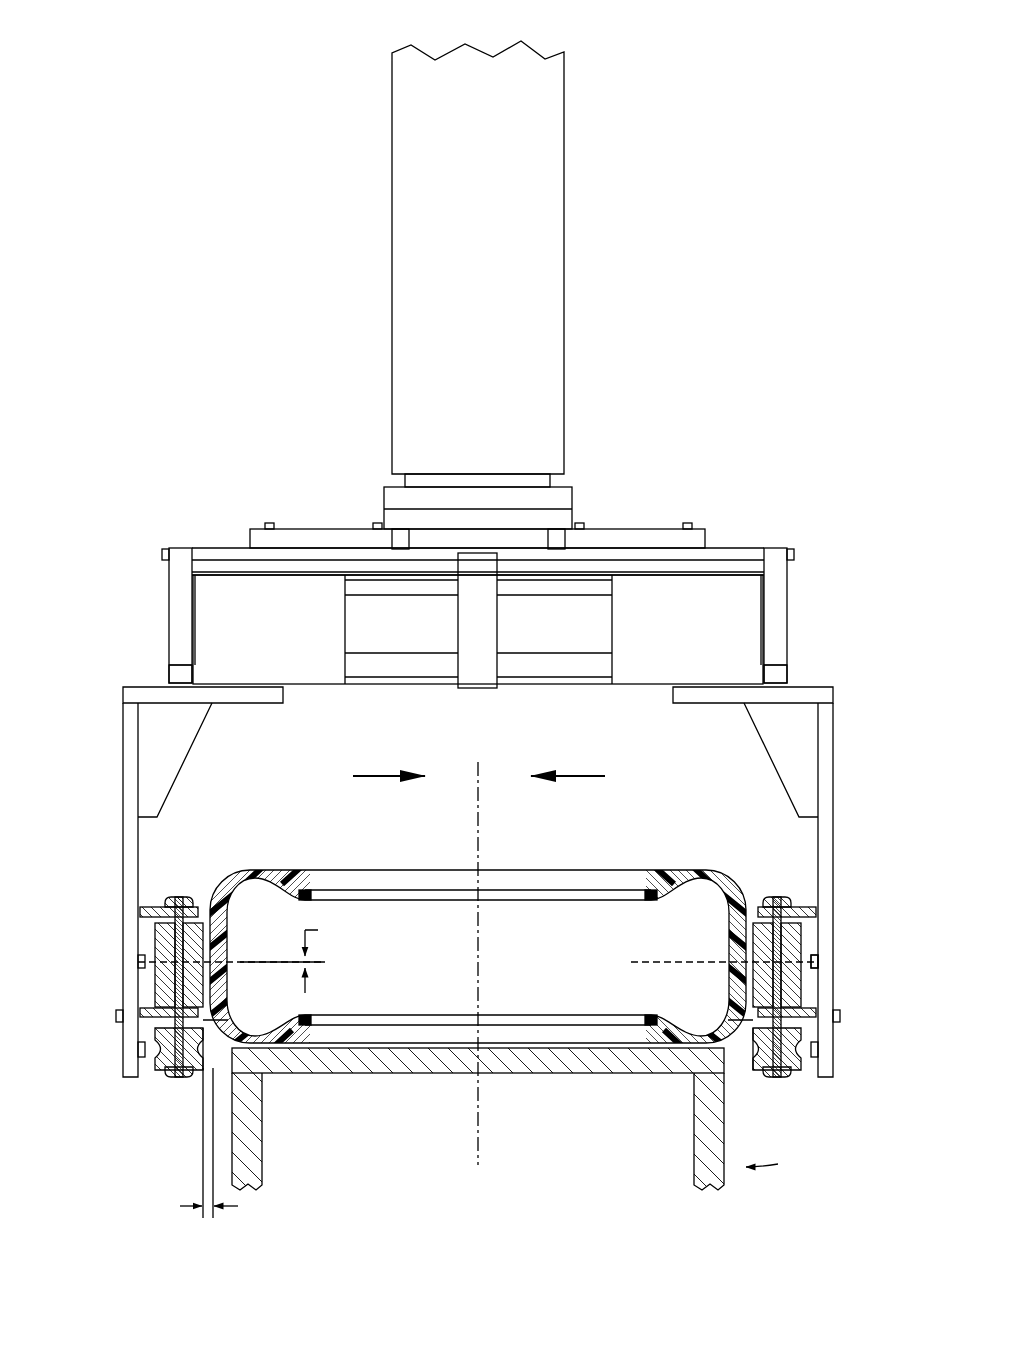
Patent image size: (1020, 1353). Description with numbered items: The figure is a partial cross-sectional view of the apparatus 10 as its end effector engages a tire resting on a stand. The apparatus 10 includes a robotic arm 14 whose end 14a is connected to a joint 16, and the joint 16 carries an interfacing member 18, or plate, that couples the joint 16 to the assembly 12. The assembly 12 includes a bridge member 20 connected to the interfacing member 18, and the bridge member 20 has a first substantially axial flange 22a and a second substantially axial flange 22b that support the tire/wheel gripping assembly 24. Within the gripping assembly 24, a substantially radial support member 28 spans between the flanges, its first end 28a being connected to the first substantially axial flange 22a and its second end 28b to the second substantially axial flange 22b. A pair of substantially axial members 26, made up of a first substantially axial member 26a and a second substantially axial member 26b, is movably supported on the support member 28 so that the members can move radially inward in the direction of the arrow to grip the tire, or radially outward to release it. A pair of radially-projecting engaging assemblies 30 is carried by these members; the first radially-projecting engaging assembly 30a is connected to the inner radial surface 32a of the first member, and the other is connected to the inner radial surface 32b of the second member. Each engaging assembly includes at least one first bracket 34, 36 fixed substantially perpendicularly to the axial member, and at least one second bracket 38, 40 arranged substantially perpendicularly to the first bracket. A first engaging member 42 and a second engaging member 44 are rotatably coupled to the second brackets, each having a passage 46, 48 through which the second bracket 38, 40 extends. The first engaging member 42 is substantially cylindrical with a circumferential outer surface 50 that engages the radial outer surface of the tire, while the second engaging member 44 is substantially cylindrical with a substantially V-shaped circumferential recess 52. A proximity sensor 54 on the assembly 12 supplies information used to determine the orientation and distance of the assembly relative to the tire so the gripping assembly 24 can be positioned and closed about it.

The apparatus 10 is at (158, 79).
The assembly 12 is at (167, 496).
The robotic arm 14 is at (359, 375).
The end 14a is at (569, 466).
The joint 16 is at (366, 513).
The interfacing member 18 is at (583, 511).
The bridge member 20 is at (667, 516).
The first substantially axial flange 22a is at (160, 607).
The second substantially axial flange 22b is at (796, 607).
The tire/wheel gripping assembly 24 is at (96, 810).
The pair of substantially axial members 26 is at (118, 851).
The first substantially axial member 26a is at (121, 890).
The second substantially axial member 26b is at (836, 890).
The substantially radial support member 28 is at (400, 688).
The first end 28a is at (199, 667).
The second end 28b is at (757, 667).
The pair of radially-projecting engaging assemblies 30 is at (194, 886).
The first radially-projecting engaging assembly 30a is at (203, 894).
The inner radial surface 32a is at (139, 845).
The inner radial surface 32b is at (817, 845).
The first bracket 34 is at (135, 907).
The first bracket 36 is at (199, 1016).
The second bracket 38 is at (175, 1079).
The second bracket 40 is at (478, 987).
The first engaging member 42 is at (228, 927).
The second engaging member 44 is at (195, 1083).
The passage 46 is at (195, 957).
The passage 48 is at (199, 1032).
The circumferential outer surface 50 is at (209, 982).
The substantially V-shaped circumferential recess 52 is at (204, 1048).
The proximity sensor 54 is at (813, 979).